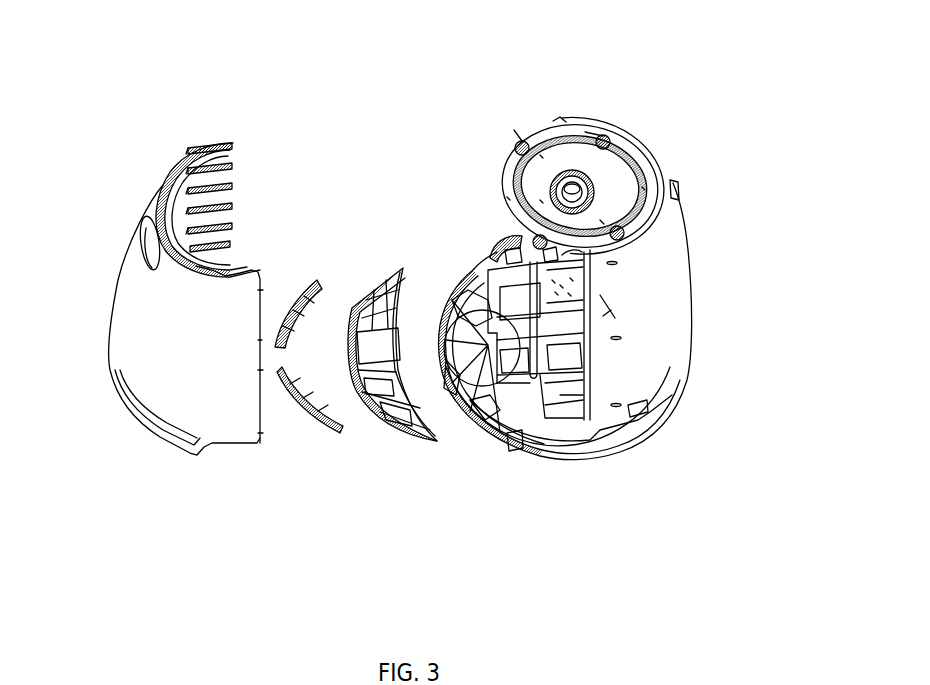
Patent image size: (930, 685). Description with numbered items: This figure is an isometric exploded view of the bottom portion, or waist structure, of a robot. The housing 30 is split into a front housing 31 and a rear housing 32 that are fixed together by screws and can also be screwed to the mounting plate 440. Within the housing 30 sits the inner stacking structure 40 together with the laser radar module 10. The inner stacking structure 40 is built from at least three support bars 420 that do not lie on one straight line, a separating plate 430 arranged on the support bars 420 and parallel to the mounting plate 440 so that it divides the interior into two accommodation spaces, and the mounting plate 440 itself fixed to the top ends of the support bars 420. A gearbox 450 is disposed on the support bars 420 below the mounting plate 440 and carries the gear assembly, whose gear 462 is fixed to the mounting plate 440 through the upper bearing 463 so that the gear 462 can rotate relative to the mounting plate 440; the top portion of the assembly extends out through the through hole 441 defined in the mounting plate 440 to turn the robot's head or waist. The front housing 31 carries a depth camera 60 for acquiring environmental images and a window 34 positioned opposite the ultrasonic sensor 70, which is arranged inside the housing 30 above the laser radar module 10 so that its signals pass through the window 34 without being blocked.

The laser radar module 10 is at (407, 440).
The housing 30 is at (412, 55).
The front housing 31 is at (222, 287).
The rear housing 32 is at (607, 313).
The window 34 is at (133, 413).
The inner stacking structure 40 is at (798, 497).
The depth camera 60 is at (147, 222).
The ultrasonic sensor 70 is at (300, 407).
The support bars 420 is at (535, 430).
The separating plate 430 is at (558, 370).
The mounting plate 440 is at (598, 213).
The through hole 441 is at (640, 168).
The gearbox 450 is at (532, 165).
The gear 462 is at (603, 142).
The upper bearing 463 is at (583, 177).